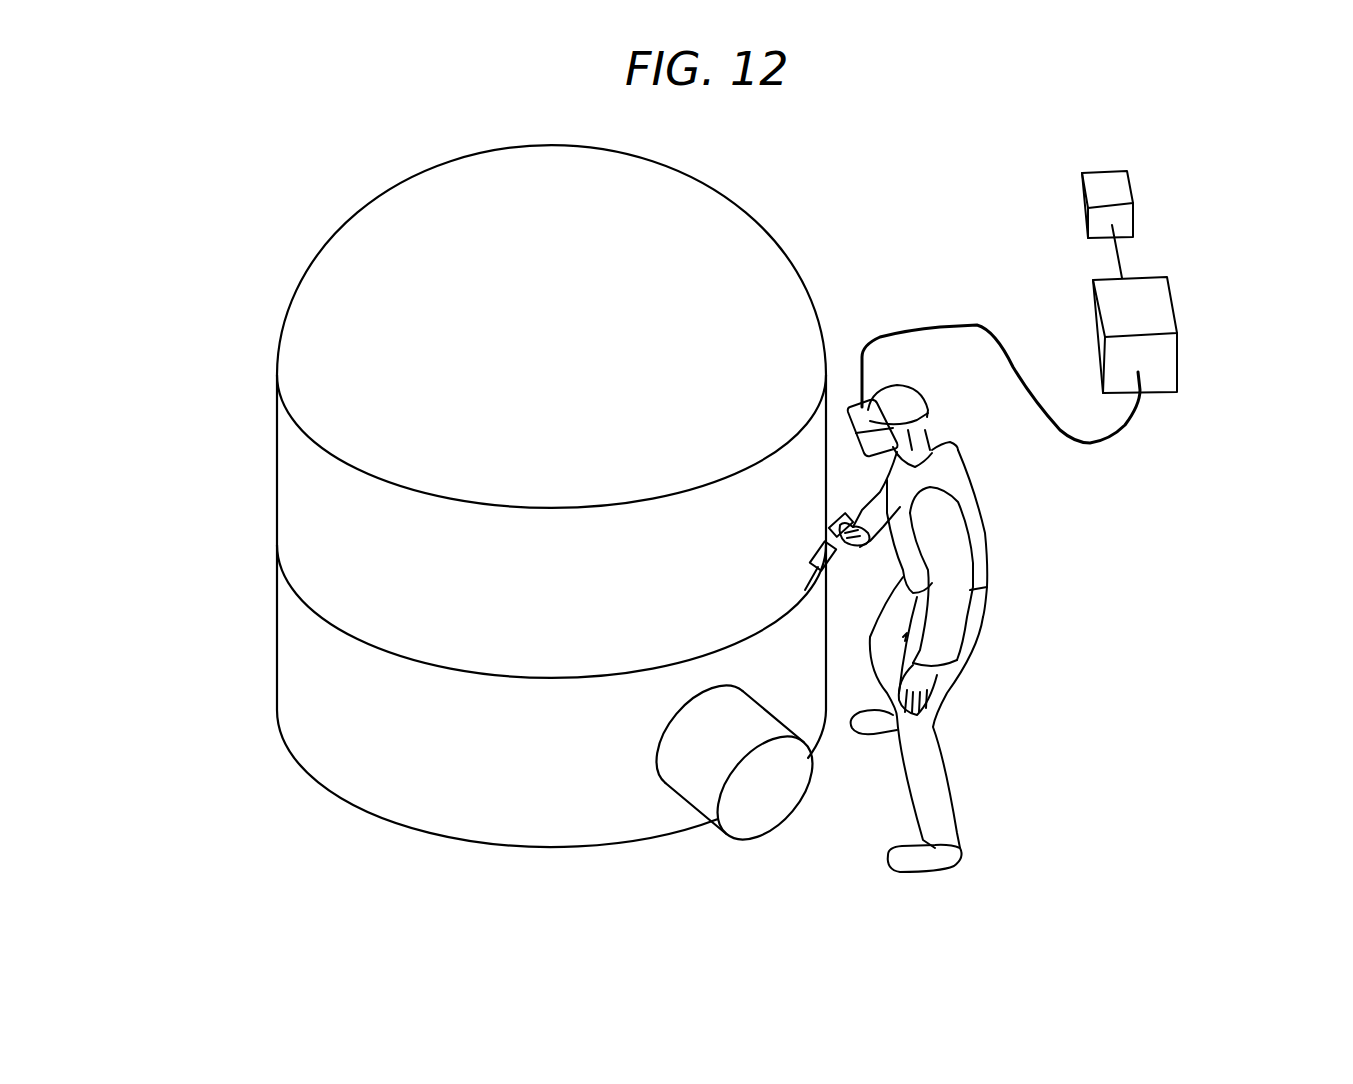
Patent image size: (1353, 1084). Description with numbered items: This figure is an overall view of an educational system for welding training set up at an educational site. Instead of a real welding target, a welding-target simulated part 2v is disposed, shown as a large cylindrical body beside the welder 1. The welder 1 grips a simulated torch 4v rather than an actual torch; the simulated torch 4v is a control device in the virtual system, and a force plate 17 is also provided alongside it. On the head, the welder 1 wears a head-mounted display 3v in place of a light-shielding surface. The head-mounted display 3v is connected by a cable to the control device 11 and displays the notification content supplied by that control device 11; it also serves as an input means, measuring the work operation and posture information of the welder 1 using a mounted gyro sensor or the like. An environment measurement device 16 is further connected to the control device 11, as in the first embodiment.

The welder 1 is at (958, 883).
The welding-target simulated part 2v is at (243, 152).
The head-mounted display 3v is at (853, 421).
The simulated torch 4v is at (822, 557).
The control device 11 is at (1175, 290).
The environment measurement device 16 is at (1130, 182).
The force plate 17 is at (832, 518).